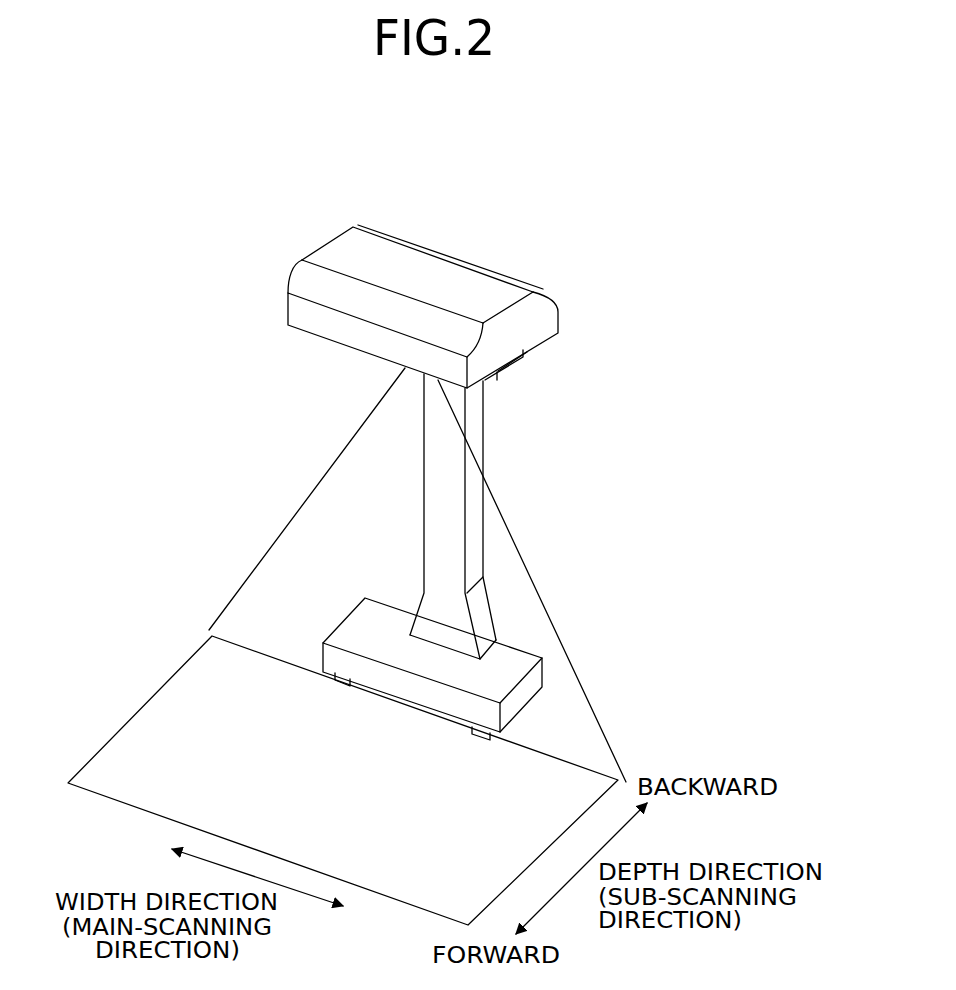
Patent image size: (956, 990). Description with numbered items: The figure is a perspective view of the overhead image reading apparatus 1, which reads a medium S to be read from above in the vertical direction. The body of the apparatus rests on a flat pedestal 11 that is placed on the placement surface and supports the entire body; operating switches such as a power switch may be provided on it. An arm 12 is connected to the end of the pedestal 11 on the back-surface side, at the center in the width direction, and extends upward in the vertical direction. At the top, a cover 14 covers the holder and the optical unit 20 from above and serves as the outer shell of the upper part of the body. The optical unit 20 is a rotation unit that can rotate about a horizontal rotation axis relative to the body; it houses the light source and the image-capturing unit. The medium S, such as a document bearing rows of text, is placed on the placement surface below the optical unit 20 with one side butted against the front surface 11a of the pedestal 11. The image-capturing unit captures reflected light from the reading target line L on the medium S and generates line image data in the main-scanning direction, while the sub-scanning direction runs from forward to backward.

The overhead image reading apparatus 1 is at (476, 226).
The pedestal 11 is at (528, 638).
The front surface 11a is at (470, 705).
The arm 12 is at (498, 436).
The cover 14 is at (337, 262).
The optical unit 20 is at (523, 360).
The reading target line L is at (207, 628).
The medium to be read S is at (138, 710).